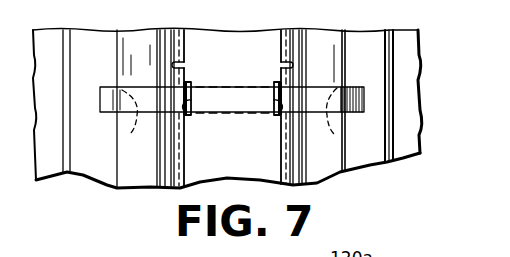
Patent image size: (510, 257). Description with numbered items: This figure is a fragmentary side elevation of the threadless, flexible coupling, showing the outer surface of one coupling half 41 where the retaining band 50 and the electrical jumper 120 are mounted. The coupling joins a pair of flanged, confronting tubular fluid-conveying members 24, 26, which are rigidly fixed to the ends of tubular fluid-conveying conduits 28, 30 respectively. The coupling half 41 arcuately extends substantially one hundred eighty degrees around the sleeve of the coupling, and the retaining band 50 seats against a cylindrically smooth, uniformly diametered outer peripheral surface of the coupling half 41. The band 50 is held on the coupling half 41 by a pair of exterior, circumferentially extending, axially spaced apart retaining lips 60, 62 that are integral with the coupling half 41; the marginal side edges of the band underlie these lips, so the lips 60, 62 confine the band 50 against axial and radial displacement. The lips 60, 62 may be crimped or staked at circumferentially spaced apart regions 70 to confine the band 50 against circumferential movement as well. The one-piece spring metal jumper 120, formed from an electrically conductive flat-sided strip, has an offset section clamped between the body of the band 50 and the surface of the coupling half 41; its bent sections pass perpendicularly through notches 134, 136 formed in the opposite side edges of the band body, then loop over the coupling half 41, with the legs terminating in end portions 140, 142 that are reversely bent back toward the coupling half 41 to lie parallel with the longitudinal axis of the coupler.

The fluid-conveying member 24 is at (108, 165).
The fluid-conveying member 26 is at (377, 152).
The fluid-conveying conduit 28 is at (53, 163).
The fluid-conveying conduit 30 is at (420, 150).
The coupling half 41 is at (125, 44).
The retaining band 50 is at (243, 171).
The retaining lip 60 is at (183, 43).
The retaining lip 62 is at (283, 45).
The crimped or staked regions 70 is at (279, 67).
The electrical spring metal jumper 120 is at (357, 86).
The notch 134 is at (183, 117).
The notch 136 is at (278, 117).
The end portion 140 is at (128, 132).
The end portion 142 is at (342, 128).